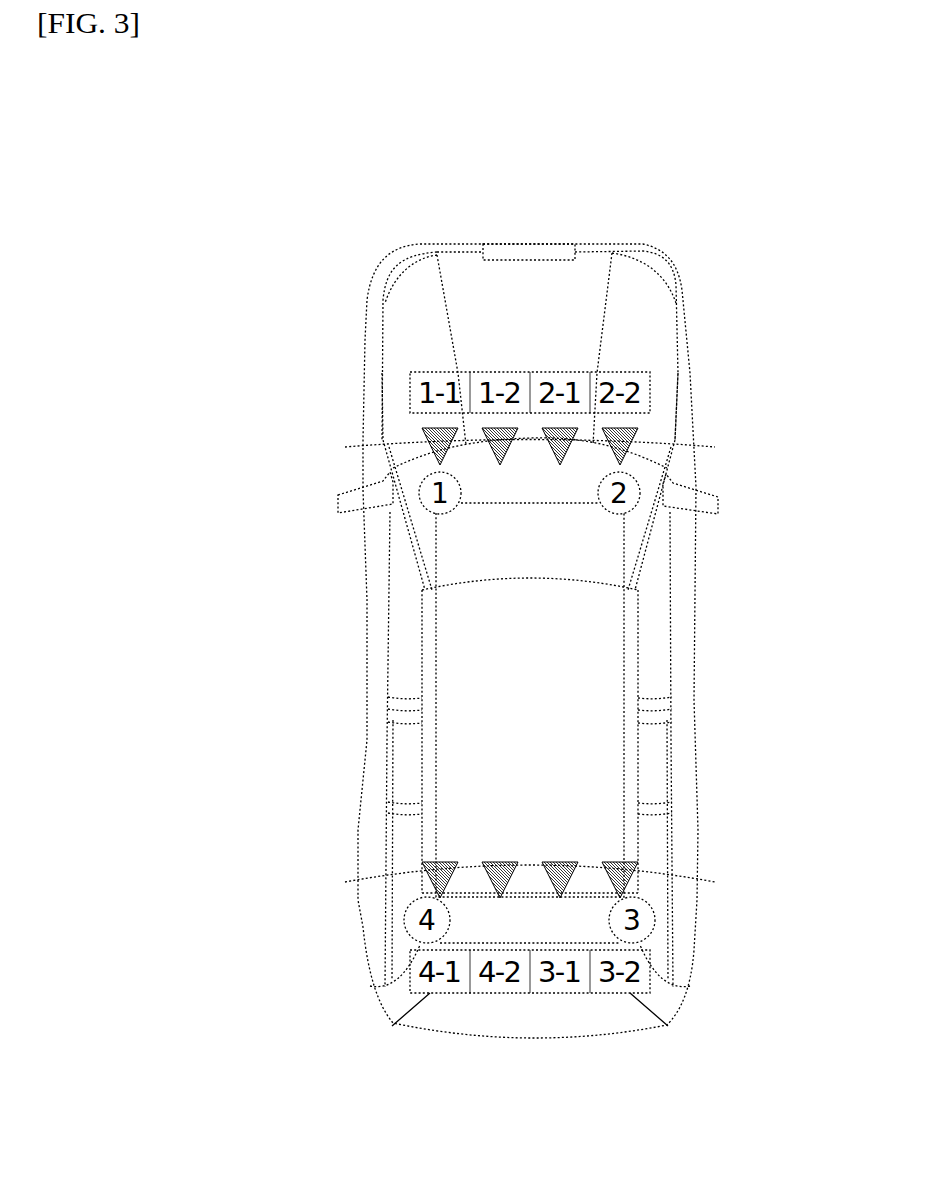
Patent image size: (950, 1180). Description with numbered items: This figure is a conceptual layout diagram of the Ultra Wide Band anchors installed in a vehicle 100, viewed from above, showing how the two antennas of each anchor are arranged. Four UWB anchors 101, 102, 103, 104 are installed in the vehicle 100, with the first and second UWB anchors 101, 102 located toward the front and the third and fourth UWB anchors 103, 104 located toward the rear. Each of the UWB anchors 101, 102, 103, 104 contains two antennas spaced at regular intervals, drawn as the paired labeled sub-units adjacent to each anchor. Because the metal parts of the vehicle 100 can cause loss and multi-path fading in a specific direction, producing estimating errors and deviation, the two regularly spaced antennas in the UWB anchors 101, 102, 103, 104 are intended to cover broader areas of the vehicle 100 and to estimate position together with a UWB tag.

The vehicle 100 is at (647, 323).
The UWB anchor 101 is at (430, 430).
The UWB anchor 102 is at (635, 437).
The UWB anchor 103 is at (637, 870).
The UWB anchor 104 is at (427, 869).